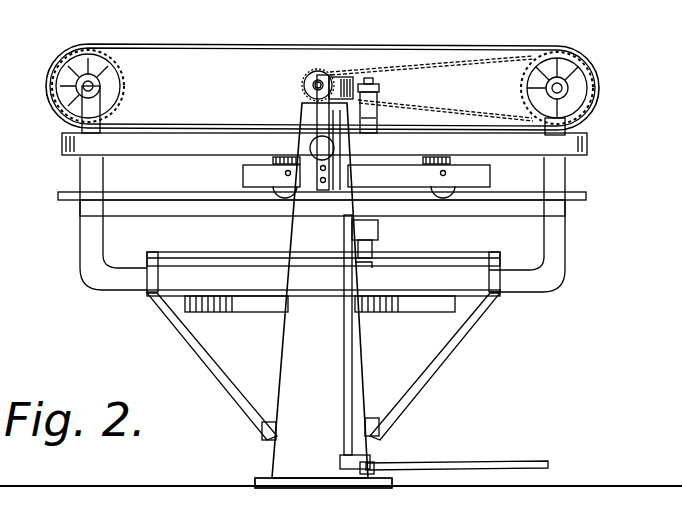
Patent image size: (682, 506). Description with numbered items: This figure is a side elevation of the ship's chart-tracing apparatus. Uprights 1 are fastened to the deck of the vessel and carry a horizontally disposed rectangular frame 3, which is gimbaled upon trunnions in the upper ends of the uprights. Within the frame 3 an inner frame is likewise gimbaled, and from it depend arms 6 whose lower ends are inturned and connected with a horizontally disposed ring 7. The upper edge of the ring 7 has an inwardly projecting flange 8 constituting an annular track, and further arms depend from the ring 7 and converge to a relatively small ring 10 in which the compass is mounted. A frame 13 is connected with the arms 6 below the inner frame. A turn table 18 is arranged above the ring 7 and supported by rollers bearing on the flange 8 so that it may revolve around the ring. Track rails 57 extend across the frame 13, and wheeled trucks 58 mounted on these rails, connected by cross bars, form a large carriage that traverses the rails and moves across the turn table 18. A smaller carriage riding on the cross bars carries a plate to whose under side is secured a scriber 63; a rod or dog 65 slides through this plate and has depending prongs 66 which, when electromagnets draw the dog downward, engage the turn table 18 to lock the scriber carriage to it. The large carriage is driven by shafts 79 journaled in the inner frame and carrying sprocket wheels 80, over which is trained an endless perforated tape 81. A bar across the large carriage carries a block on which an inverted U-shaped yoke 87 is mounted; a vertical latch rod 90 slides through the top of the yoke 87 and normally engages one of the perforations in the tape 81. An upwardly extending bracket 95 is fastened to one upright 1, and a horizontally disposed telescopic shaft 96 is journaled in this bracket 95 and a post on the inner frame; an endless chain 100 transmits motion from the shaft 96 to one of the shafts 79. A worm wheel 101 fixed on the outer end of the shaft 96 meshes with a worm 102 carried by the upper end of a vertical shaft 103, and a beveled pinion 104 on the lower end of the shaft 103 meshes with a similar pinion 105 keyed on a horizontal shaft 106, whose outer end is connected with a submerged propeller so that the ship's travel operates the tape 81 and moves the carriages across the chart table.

The upright 1 is at (324, 357).
The rectangular frame 3 is at (62, 140).
The arm 6 is at (92, 254).
The ring 7 is at (198, 278).
The flange 8 is at (420, 392).
The small ring 10 is at (270, 441).
The frame 13 is at (489, 206).
The turn table 18 is at (422, 264).
The track rail 57 is at (158, 196).
The wheeled truck 58 is at (366, 177).
The scriber 63 is at (378, 246).
The rod or dog 65 is at (357, 250).
The prong 66 is at (356, 268).
The shaft 79 is at (93, 86).
The sprocket wheel 80 is at (522, 84).
The tape 81 is at (250, 45).
The yoke 87 is at (370, 120).
The latch rod 90 is at (377, 87).
The bracket 95 is at (321, 122).
The telescopic shaft 96 is at (306, 88).
The endless chain 100 is at (492, 56).
The worm wheel 101 is at (322, 70).
The worm 102 is at (355, 78).
The vertical shaft 103 is at (350, 362).
The beveled pinion 104 is at (323, 473).
The pinion 105 is at (374, 462).
The horizontal shaft 106 is at (497, 463).